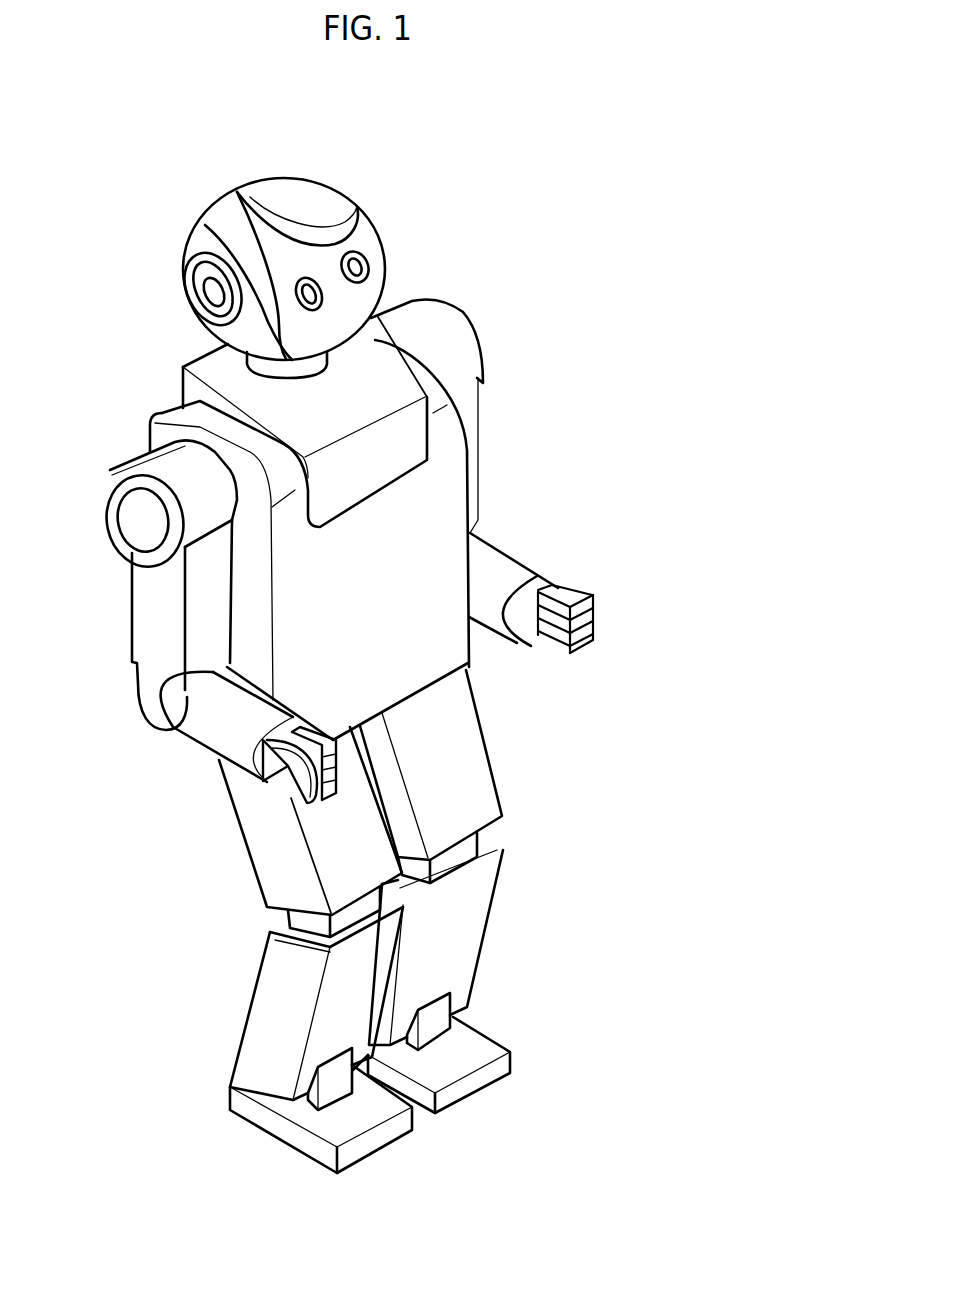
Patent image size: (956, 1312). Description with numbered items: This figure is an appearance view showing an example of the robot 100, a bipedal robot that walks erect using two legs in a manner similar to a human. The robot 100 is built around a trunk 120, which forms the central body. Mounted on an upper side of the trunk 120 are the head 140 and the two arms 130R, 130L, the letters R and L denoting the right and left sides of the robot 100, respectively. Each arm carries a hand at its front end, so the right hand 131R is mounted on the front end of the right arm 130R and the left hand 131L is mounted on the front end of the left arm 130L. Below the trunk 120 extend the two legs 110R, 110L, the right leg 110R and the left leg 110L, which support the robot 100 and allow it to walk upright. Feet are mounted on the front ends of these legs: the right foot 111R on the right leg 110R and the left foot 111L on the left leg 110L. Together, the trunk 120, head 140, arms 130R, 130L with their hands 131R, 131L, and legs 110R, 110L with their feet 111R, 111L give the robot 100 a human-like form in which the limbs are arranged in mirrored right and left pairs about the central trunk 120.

The robot 100 is at (443, 211).
The head 140 is at (368, 218).
The trunk 120 is at (420, 507).
The right arm 130R is at (150, 684).
The left arm 130L is at (527, 573).
The right hand 131R is at (293, 781).
The left hand 131L is at (600, 618).
The right leg 110R is at (263, 1003).
The left leg 110L is at (475, 928).
The right foot 111R is at (287, 1132).
The left foot 111L is at (503, 1067).